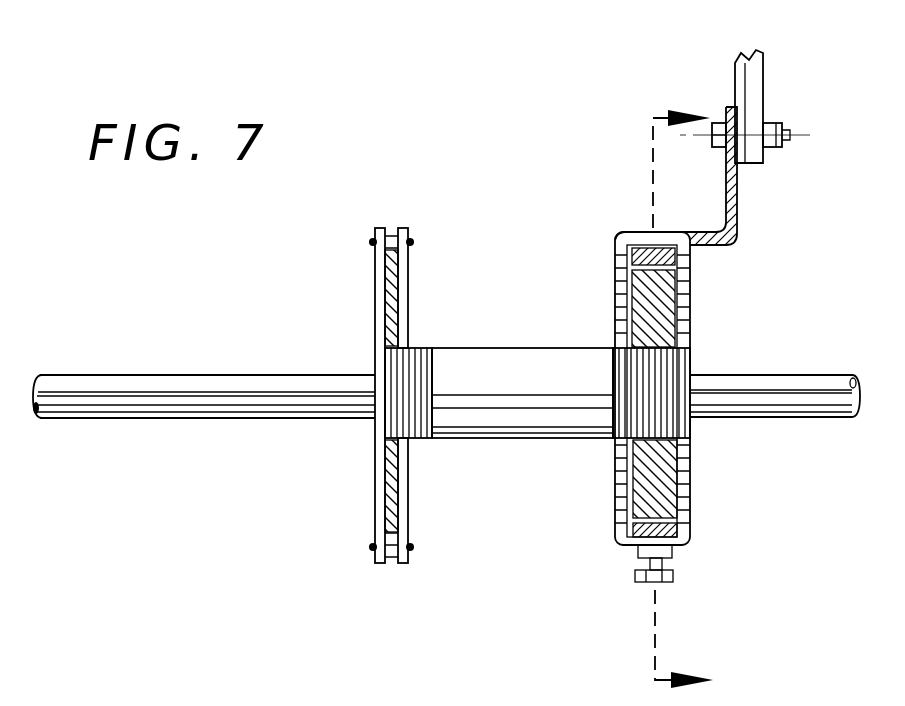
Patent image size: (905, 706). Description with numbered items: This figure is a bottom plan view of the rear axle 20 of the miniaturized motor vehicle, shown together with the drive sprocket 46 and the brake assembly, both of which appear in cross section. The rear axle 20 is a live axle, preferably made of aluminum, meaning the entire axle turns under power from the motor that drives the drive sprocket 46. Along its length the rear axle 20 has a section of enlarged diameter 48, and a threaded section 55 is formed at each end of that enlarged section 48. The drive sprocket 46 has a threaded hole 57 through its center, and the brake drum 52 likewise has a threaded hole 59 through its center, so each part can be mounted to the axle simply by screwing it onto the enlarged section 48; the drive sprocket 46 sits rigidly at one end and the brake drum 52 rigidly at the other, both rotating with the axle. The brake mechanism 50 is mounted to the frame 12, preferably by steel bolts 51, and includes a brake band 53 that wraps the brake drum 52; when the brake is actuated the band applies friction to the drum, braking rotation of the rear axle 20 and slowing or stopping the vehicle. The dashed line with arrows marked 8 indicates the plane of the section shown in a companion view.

The rear axle 20 is at (207, 378).
The enlarged diameter section 48 is at (470, 360).
The threaded section 55 is at (410, 360).
The drive sprocket 46 is at (408, 268).
The threaded hole 57 is at (398, 458).
The brake drum 52 is at (662, 490).
The brake band 53 is at (642, 248).
The threaded hole 59 is at (650, 453).
The brake mechanism 50 is at (775, 250).
The frame 12 is at (772, 115).
The steel bolts 51 is at (720, 120).
The section line for FIG. 8 is at (683, 382).